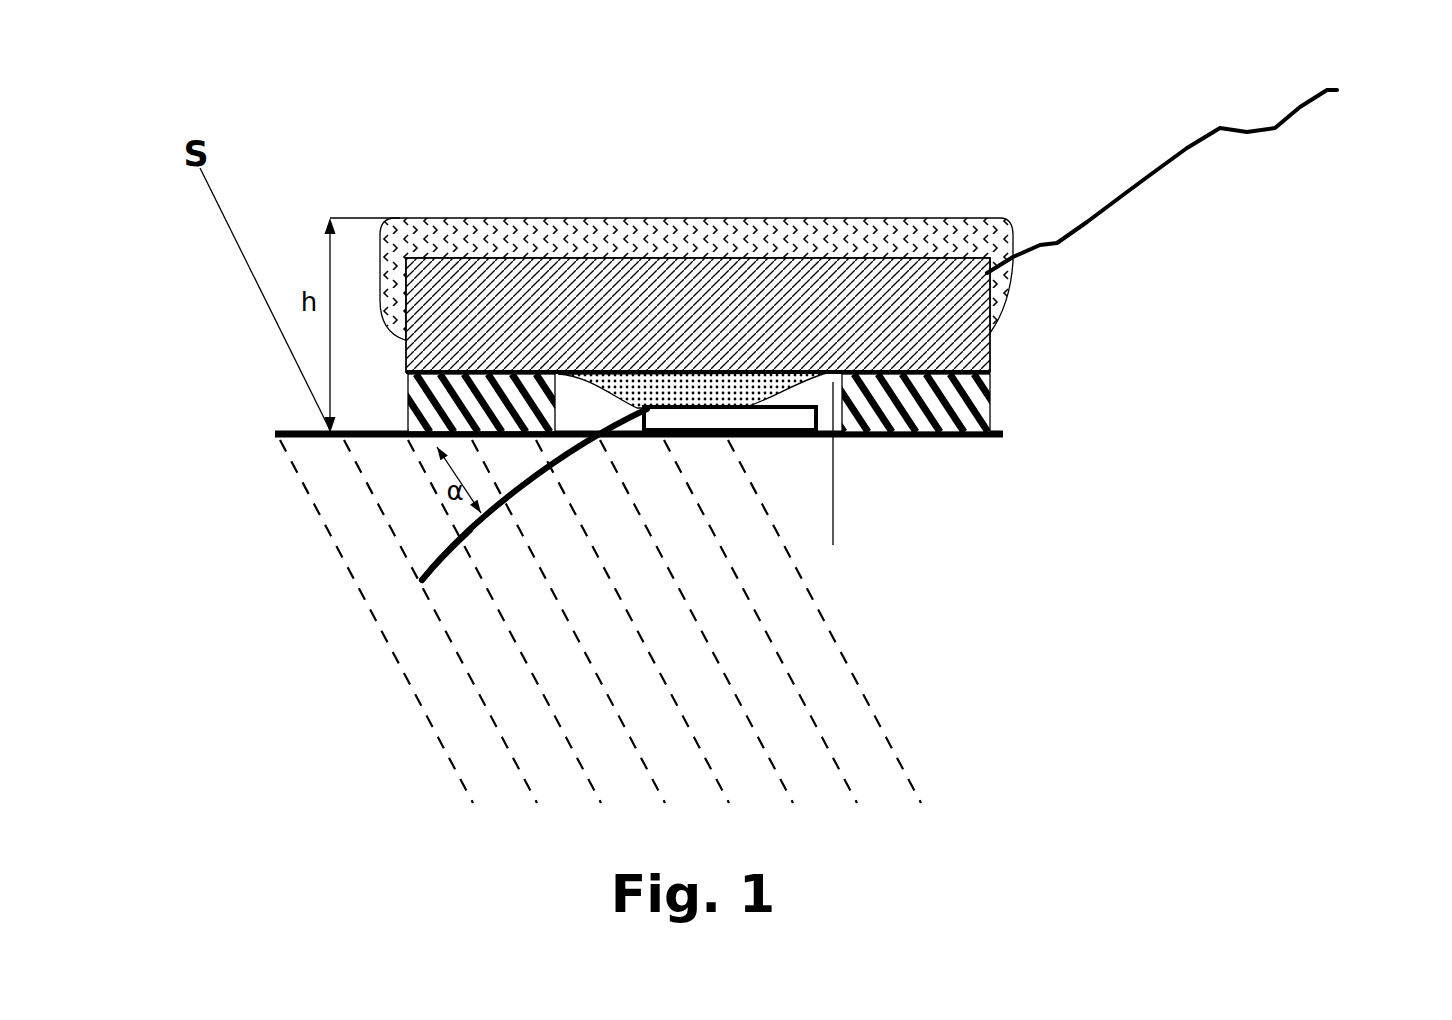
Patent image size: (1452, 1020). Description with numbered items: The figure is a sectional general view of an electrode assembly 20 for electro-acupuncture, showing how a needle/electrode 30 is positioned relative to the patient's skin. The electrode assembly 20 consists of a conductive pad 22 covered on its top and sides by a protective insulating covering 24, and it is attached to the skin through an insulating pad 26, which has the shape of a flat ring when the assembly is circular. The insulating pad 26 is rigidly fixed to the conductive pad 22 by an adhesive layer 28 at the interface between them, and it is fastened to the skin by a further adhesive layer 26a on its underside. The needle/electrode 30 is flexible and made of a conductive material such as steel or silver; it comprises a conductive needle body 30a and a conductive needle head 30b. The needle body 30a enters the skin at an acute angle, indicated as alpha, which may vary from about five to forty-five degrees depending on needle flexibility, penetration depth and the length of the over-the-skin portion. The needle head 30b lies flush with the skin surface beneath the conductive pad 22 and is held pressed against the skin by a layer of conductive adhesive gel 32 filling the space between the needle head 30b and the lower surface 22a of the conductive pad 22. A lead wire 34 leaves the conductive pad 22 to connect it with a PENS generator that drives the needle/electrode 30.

The electrode assembly 20 is at (655, 158).
The conductive pad 22 is at (940, 322).
The lower surface of the conductive pad 22a is at (847, 496).
The protective insulating covering 24 is at (535, 240).
The insulating pad 26 is at (410, 440).
The adhesive layer 26a is at (453, 438).
The adhesive layer 28 is at (412, 376).
The needle/electrode 30 is at (556, 462).
The conductive needle body 30a is at (462, 543).
The conductive needle head 30b is at (827, 372).
The conductive adhesive gel 32 is at (693, 373).
The lead wire 34 is at (1193, 148).